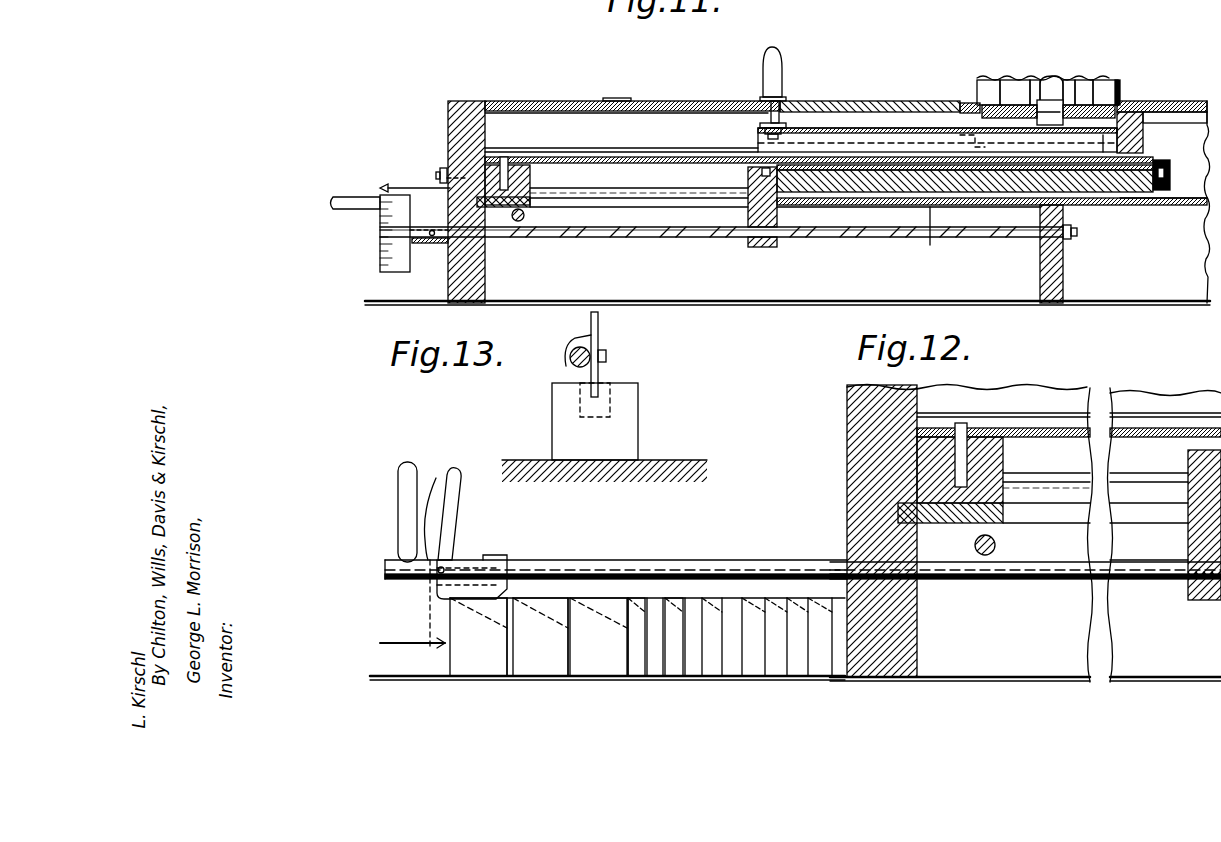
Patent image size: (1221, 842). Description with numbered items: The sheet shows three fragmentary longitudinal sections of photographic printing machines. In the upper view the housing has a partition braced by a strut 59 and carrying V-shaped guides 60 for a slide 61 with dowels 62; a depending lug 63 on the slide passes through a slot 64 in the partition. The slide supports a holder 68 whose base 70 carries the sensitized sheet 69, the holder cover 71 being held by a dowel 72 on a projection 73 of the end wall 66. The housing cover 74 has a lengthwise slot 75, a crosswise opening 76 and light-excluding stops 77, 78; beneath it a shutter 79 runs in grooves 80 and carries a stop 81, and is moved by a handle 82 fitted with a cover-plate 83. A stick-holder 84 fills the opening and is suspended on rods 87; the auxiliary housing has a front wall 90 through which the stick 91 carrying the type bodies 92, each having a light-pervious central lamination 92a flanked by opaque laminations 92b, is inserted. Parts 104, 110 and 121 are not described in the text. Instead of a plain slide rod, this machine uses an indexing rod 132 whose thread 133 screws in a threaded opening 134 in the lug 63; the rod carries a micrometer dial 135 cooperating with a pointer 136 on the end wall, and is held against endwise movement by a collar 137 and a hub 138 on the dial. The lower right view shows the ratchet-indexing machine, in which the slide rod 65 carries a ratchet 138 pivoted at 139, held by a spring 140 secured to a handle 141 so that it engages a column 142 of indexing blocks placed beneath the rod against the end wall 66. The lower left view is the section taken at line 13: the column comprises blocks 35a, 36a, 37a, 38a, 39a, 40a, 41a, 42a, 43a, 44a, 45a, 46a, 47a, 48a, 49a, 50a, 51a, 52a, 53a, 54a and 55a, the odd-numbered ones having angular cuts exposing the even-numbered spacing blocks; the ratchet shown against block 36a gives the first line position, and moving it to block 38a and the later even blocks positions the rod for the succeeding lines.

In FIG. 13, the section line 13 is at (412, 654).
In FIG. 13, the indexing block 35a is at (478, 665).
In FIG. 13, the indexing block 36a is at (507, 668).
In FIG. 13, the indexing block 37a is at (538, 662).
In FIG. 13, the indexing block 38a is at (570, 668).
In FIG. 13, the indexing block 39a is at (597, 665).
In FIG. 13, the indexing block 40a is at (630, 668).
In FIG. 13, the indexing block 41a is at (640, 668).
In FIG. 13, the indexing block 42a is at (655, 668).
In FIG. 13, the indexing block 43a is at (674, 668).
In FIG. 13, the indexing block 44a is at (693, 668).
In FIG. 13, the indexing block 45a is at (712, 668).
In FIG. 13, the indexing block 46a is at (722, 598).
In FIG. 13, the indexing block 47a is at (735, 668).
In FIG. 13, the indexing block 48a is at (742, 598).
In FIG. 13, the indexing block 49a is at (760, 668).
In FIG. 13, the indexing block 50a is at (765, 598).
In FIG. 13, the indexing block 51a is at (780, 668).
In FIG. 13, the indexing block 52a is at (787, 598).
In FIG. 13, the indexing block 53a is at (805, 668).
In FIG. 13, the indexing block 54a is at (832, 668).
In FIG. 13, the indexing block 55a is at (838, 668).
In FIG. 11, the strut 59 is at (1063, 278).
In FIG. 11, the horizontal guides 60 is at (652, 198).
In FIG. 12, the horizontal guides 60 is at (1060, 490).
In FIG. 11, the slide 61 is at (1135, 200).
In FIG. 11, the dowels 62 is at (748, 176).
In FIG. 12, the dowels 62 is at (1188, 466).
In FIG. 11, the depending lug 63 is at (777, 218).
In FIG. 12, the depending lug 63 is at (1195, 545).
In FIG. 11, the slot 64 is at (606, 225).
In FIG. 12, the slot 64 is at (1073, 520).
In FIG. 12, the indexing rod 65 is at (992, 580).
In FIG. 13, the indexing rod 65 is at (598, 350).
In FIG. 11, the end wall 66 is at (468, 128).
In FIG. 12, the end wall 66 is at (850, 432).
In FIG. 11, the holder 68 is at (1172, 168).
In FIG. 11, the sheet 69 is at (885, 192).
In FIG. 11, the base 70 is at (1018, 196).
In FIG. 12, the base 70 is at (1200, 450).
In FIG. 11, the cover 71 is at (597, 157).
In FIG. 12, the cover 71 is at (1053, 428).
In FIG. 11, the dowel 72 is at (520, 183).
In FIG. 12, the dowel 72 is at (967, 472).
In FIG. 11, the projection 73 is at (530, 190).
In FIG. 12, the projection 73 is at (985, 490).
In FIG. 11, the cover 74 is at (548, 101).
In FIG. 11, the slot 75 is at (686, 116).
In FIG. 11, the opening 76 is at (1012, 80).
In FIG. 11, the light-excluding stop 77 is at (968, 103).
In FIG. 11, the light-excluding stop 78 is at (1143, 148).
In FIG. 11, the shutter 79 is at (818, 128).
In FIG. 11, the grooves 80 is at (550, 152).
In FIG. 12, the grooves 80 is at (1005, 413).
In FIG. 11, the stop 81 is at (945, 105).
In FIG. 11, the handle 82 is at (782, 64).
In FIG. 11, the cover-plate 83 is at (763, 98).
In FIG. 11, the stick-holder 84 is at (1125, 102).
In FIG. 11, the rods 87 is at (1145, 128).
In FIG. 11, the front wall 90 is at (1122, 85).
In FIG. 11, the stick 91 is at (1086, 80).
In FIG. 11, the printing type bodies 92 is at (1044, 80).
In FIG. 11, the central lamination 92a is at (1050, 125).
In FIG. 11, the opaque laminations 92b is at (1052, 76).
In FIG. 11, the key finger 104 is at (988, 80).
In FIG. 11, the spacer 110 is at (1055, 81).
In FIG. 11, the pin 121 is at (516, 222).
In FIG. 12, the pin 121 is at (975, 545).
In FIG. 11, the indexing rod 132 is at (660, 240).
In FIG. 11, the thread 133 is at (730, 240).
In FIG. 11, the threaded opening 134 is at (763, 247).
In FIG. 11, the micrometer dial 135 is at (382, 258).
In FIG. 11, the pointer 136 is at (410, 188).
In FIG. 11, the collar 137 is at (1070, 238).
In FIG. 11, the ratchet 138 is at (430, 244).
In FIG. 13, the ratchet 138 is at (600, 372).
In FIG. 13, the pivot 139 is at (606, 354).
In FIG. 13, the spring 140 is at (436, 478).
In FIG. 13, the handle 141 is at (398, 496).
In FIG. 13, the column of blocks 142 is at (543, 426).